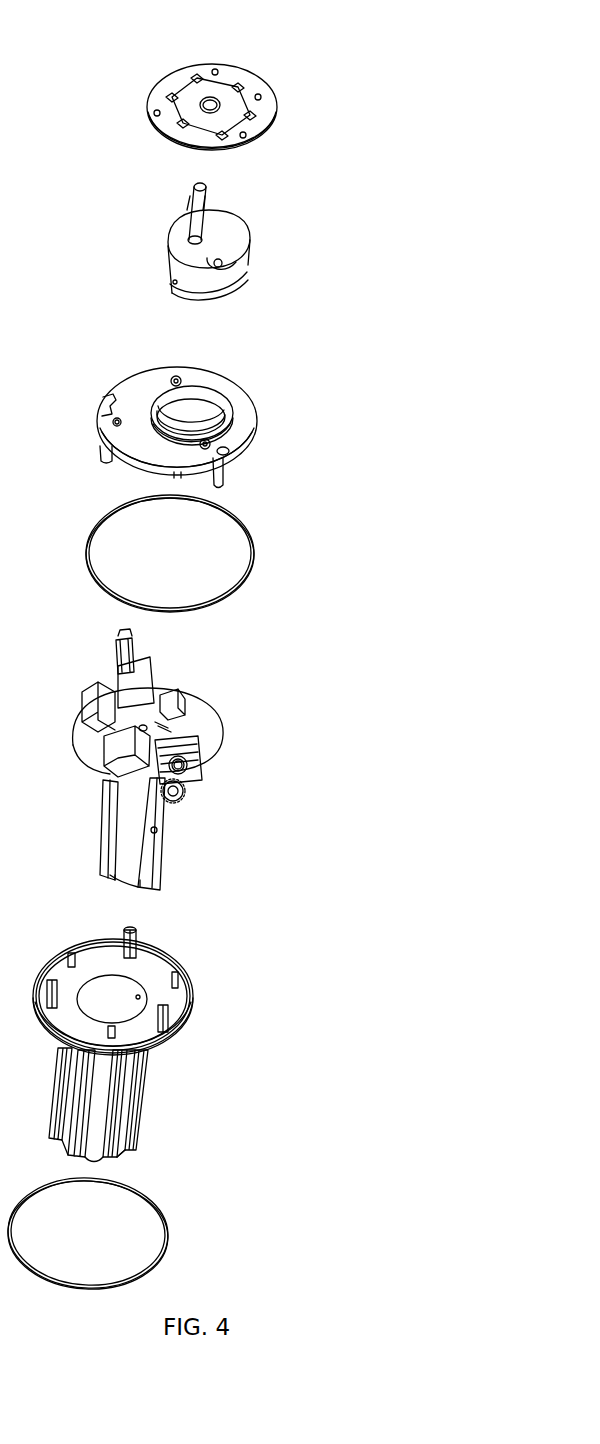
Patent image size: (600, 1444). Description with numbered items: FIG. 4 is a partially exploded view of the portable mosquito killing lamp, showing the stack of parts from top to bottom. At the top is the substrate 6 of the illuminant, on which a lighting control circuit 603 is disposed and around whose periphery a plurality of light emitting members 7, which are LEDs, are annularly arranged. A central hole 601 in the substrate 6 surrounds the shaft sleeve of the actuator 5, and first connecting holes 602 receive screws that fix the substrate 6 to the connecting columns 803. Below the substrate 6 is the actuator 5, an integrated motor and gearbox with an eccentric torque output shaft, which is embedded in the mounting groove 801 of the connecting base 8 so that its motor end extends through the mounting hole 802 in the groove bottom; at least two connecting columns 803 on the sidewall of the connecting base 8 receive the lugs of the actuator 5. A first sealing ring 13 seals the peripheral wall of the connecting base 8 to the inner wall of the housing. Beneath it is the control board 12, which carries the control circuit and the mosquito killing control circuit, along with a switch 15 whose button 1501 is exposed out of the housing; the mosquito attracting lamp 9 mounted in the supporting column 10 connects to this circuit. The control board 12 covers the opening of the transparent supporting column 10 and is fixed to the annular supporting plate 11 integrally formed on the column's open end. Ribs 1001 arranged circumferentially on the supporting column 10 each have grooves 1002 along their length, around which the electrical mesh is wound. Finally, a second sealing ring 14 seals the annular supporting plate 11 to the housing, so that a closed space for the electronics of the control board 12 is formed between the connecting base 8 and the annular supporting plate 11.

The actuator 5 is at (250, 256).
The substrate 6 is at (256, 96).
The light emitting members 7 is at (197, 78).
The central hole 601 is at (217, 98).
The first connecting holes 602 is at (216, 70).
The lighting control circuit 603 is at (262, 99).
The connecting base 8 is at (132, 392).
The mounting groove 801 is at (213, 406).
The mounting hole 802 is at (228, 414).
The connecting columns 803 is at (184, 370).
The first sealing ring 13 is at (253, 561).
The control board 12 is at (200, 718).
The switch 15 is at (208, 733).
The button 1501 is at (215, 770).
The mosquito attracting lamp 9 is at (160, 830).
The annular supporting plate 11 is at (150, 970).
The supporting column 10 is at (145, 1085).
The ribs 1001 is at (147, 1060).
The grooves 1002 is at (140, 1105).
The second sealing ring 14 is at (167, 1240).